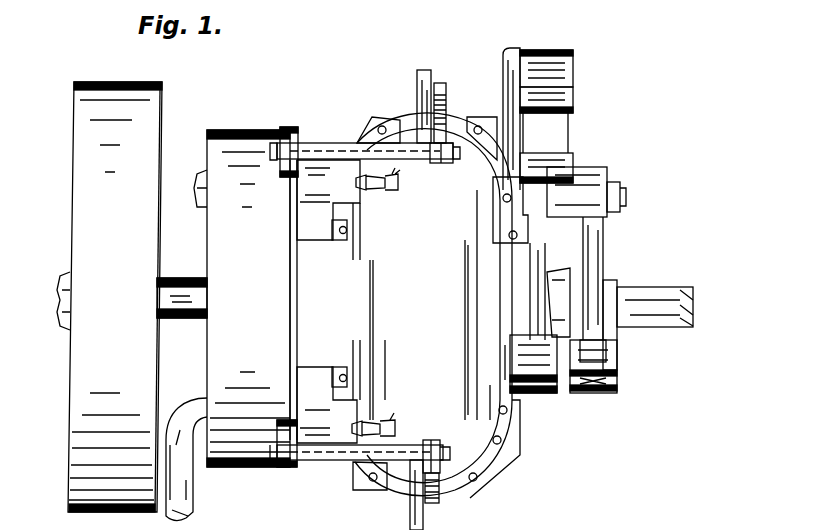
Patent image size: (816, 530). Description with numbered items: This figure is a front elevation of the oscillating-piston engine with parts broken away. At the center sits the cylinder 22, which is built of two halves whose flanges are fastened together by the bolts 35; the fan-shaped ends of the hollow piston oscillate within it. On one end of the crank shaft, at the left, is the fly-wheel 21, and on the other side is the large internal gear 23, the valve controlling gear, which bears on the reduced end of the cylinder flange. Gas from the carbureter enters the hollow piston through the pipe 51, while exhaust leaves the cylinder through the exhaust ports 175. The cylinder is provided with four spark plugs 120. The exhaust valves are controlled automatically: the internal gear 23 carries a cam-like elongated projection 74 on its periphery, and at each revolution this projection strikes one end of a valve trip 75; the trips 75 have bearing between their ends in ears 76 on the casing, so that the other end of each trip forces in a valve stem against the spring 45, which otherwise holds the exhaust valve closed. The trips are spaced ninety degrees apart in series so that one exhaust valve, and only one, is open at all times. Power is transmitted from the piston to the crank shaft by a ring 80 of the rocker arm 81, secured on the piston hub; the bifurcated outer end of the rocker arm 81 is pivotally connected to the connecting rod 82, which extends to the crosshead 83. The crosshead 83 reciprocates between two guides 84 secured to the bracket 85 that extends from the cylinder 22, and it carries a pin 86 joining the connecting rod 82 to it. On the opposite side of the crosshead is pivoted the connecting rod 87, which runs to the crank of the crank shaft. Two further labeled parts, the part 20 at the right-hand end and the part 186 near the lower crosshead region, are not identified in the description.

The drive shaft 20 is at (685, 290).
The fly-wheel 21 is at (109, 297).
The cylinder 22 is at (432, 304).
The internal gear 23 is at (256, 130).
The bolts 35 is at (505, 447).
The spring 45 is at (441, 95).
The pipe 51 is at (195, 487).
The cam-like elongated projection 74 is at (293, 127).
The valve trips 75 is at (428, 72).
The ears 76 is at (442, 165).
The ring 80 is at (548, 262).
The rocker arm 81 is at (555, 395).
The connecting rod 82 is at (548, 272).
The crosshead 83 is at (580, 170).
The guides 84 is at (553, 52).
The bracket 85 is at (503, 108).
The pin 86 is at (588, 182).
The connecting rod 87 is at (605, 258).
The spark plugs 120 is at (370, 190).
The exhaust ports 175 is at (330, 187).
The bearing block 186 is at (560, 393).